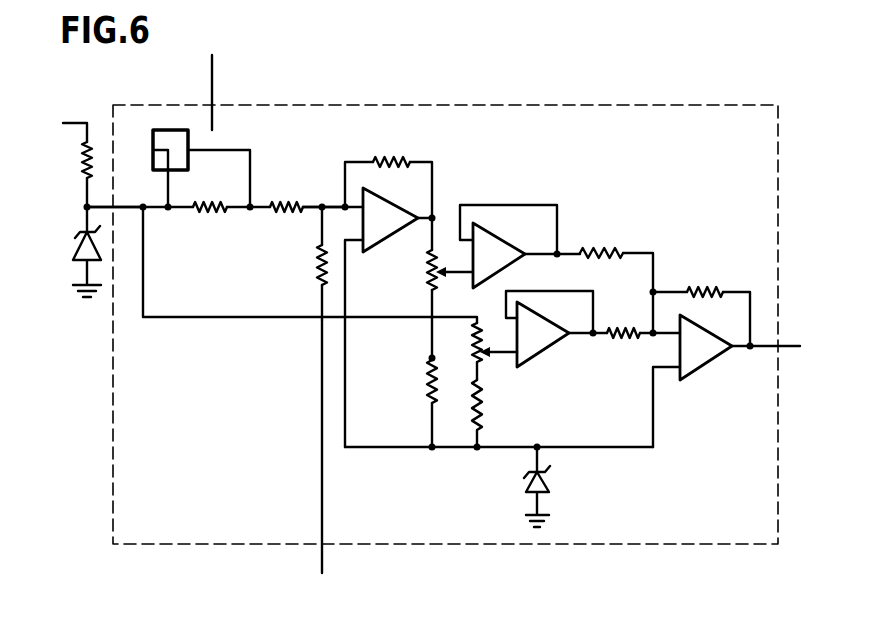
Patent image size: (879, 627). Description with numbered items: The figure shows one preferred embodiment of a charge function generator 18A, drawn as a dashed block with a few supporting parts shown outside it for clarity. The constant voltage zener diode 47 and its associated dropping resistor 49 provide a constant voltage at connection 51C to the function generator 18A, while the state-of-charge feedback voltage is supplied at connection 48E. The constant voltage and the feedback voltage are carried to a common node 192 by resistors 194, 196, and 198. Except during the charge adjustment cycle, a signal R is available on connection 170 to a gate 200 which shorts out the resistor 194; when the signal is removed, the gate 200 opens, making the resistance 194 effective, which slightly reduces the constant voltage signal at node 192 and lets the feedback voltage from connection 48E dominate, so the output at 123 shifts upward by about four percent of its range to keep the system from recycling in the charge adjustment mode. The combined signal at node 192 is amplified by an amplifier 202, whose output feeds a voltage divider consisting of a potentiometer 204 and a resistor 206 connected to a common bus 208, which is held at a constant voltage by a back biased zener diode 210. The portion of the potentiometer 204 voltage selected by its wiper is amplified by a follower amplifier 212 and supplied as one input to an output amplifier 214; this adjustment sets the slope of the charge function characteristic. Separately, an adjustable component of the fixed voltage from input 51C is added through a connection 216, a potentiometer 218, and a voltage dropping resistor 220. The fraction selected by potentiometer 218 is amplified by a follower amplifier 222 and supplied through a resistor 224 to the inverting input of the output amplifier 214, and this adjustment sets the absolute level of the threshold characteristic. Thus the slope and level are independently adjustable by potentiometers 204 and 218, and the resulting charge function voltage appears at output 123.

The charge function generator 18A is at (483, 103).
The connection 170 is at (213, 80).
The gate 200 is at (188, 135).
The dropping resistor 49 is at (85, 160).
The constant voltage zener diode 47 is at (83, 247).
The connection 51C is at (153, 177).
The resistor 194 is at (205, 212).
The resistor 196 is at (285, 212).
The common node 192 is at (322, 200).
The resistor 198 is at (318, 276).
The connection 48E is at (325, 558).
The connection 216 is at (234, 318).
The amplifier 202 is at (420, 183).
The potentiometer 204 is at (428, 262).
The resistor 206 is at (428, 385).
The follower amplifier 212 is at (532, 222).
The follower amplifier 222 is at (578, 302).
The resistor 224 is at (642, 303).
The potentiometer 218 is at (480, 360).
The voltage dropping resistor 220 is at (482, 415).
The output amplifier 214 is at (728, 310).
The output 123 is at (790, 347).
The common bus 208 is at (618, 445).
The back biased zener diode 210 is at (553, 487).